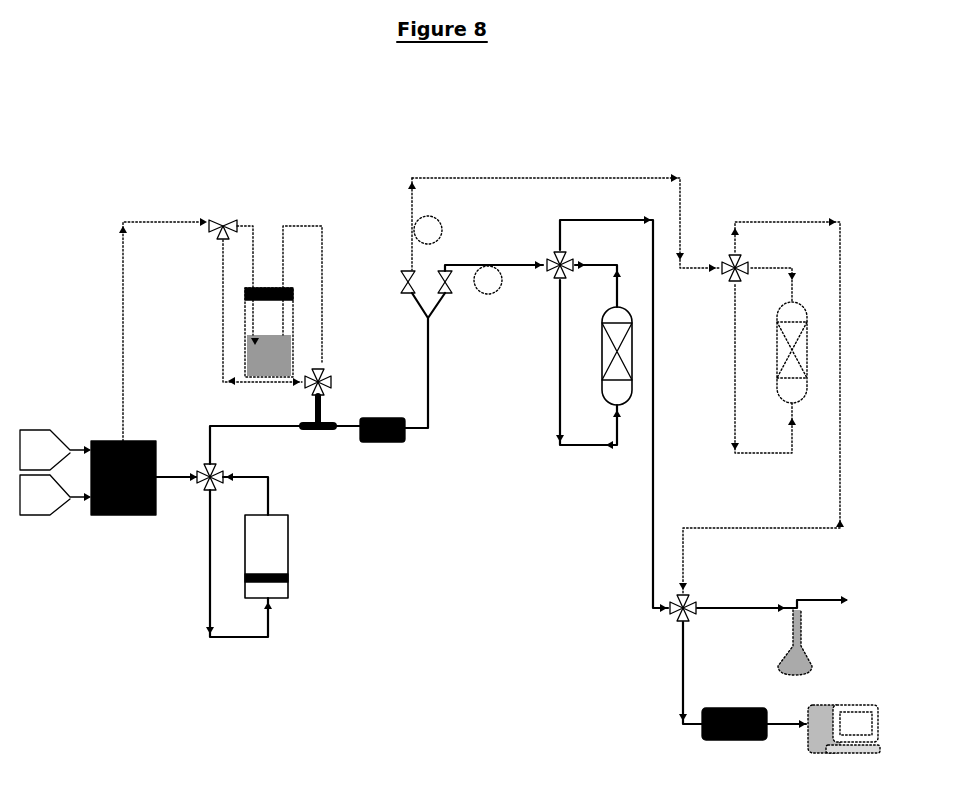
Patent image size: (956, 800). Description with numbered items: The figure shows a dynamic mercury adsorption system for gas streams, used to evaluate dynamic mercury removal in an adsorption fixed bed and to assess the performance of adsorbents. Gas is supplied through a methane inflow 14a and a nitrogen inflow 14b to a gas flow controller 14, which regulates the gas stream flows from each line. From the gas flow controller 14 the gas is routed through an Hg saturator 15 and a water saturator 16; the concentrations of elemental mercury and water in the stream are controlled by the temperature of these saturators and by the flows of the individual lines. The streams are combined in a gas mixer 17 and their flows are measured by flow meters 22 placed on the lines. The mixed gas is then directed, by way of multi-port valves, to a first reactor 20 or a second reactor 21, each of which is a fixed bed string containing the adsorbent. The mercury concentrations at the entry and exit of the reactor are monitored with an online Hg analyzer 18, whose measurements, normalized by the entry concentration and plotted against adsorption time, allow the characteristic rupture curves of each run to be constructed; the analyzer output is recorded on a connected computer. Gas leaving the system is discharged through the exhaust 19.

The gas flow controller 14 is at (149, 387).
The methane inflow 14a is at (55, 515).
The nitrogen inflow 14b is at (54, 435).
The Hg saturator 15 is at (299, 556).
The H2O saturator 16 is at (271, 323).
The gas mixer 17 is at (389, 367).
The Hg analyzer 18 is at (779, 687).
The exhaust 19 is at (778, 635).
The reactor R-1 20 is at (607, 414).
The reactor R-2 21 is at (761, 406).
The flow meters 22 is at (472, 259).